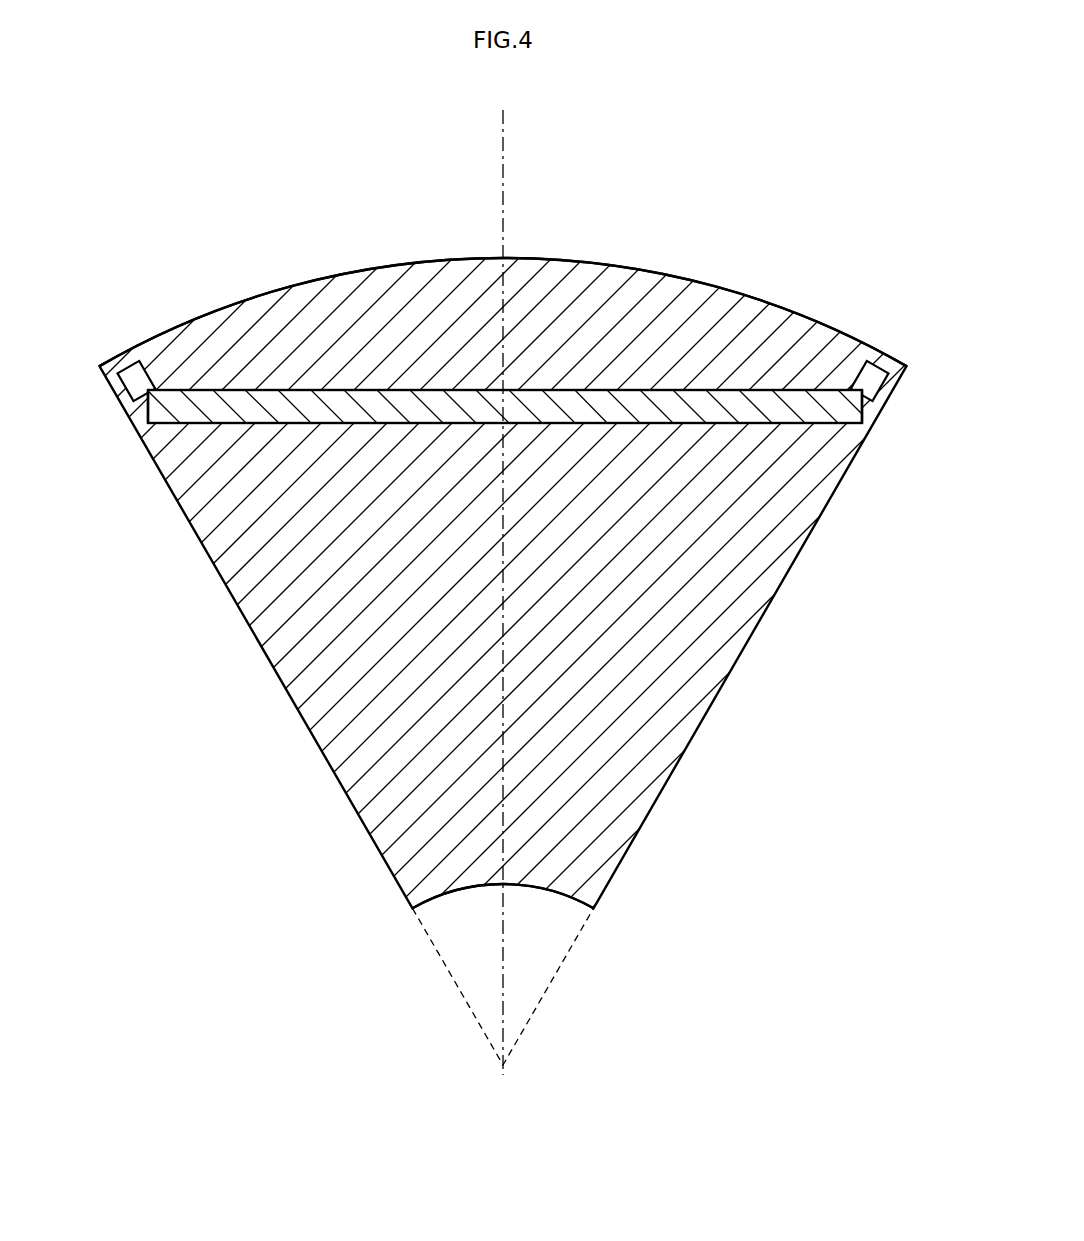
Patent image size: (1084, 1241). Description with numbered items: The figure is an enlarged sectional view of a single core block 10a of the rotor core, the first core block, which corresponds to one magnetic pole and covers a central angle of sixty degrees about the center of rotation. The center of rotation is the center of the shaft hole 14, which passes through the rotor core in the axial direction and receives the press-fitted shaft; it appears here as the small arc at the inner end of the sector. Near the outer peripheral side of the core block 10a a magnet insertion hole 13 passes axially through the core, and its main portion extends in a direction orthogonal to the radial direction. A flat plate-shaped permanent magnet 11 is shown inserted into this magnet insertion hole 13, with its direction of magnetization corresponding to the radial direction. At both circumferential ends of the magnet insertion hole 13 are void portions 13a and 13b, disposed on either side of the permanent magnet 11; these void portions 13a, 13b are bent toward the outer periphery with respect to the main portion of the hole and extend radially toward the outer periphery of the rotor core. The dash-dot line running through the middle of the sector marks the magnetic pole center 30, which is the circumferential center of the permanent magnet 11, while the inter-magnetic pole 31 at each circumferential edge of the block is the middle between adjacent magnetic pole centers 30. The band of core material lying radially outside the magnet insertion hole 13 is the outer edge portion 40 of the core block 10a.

The core block 10a is at (722, 632).
The permanent magnet 11 is at (737, 412).
The magnet insertion hole 13 is at (527, 314).
The void portion 13a is at (150, 380).
The void portion 13b is at (870, 398).
The shaft hole 14 is at (574, 903).
The magnetic pole center 30 is at (508, 130).
The inter-magnetic pole 31 is at (115, 393).
The outer edge portion 40 is at (262, 315).